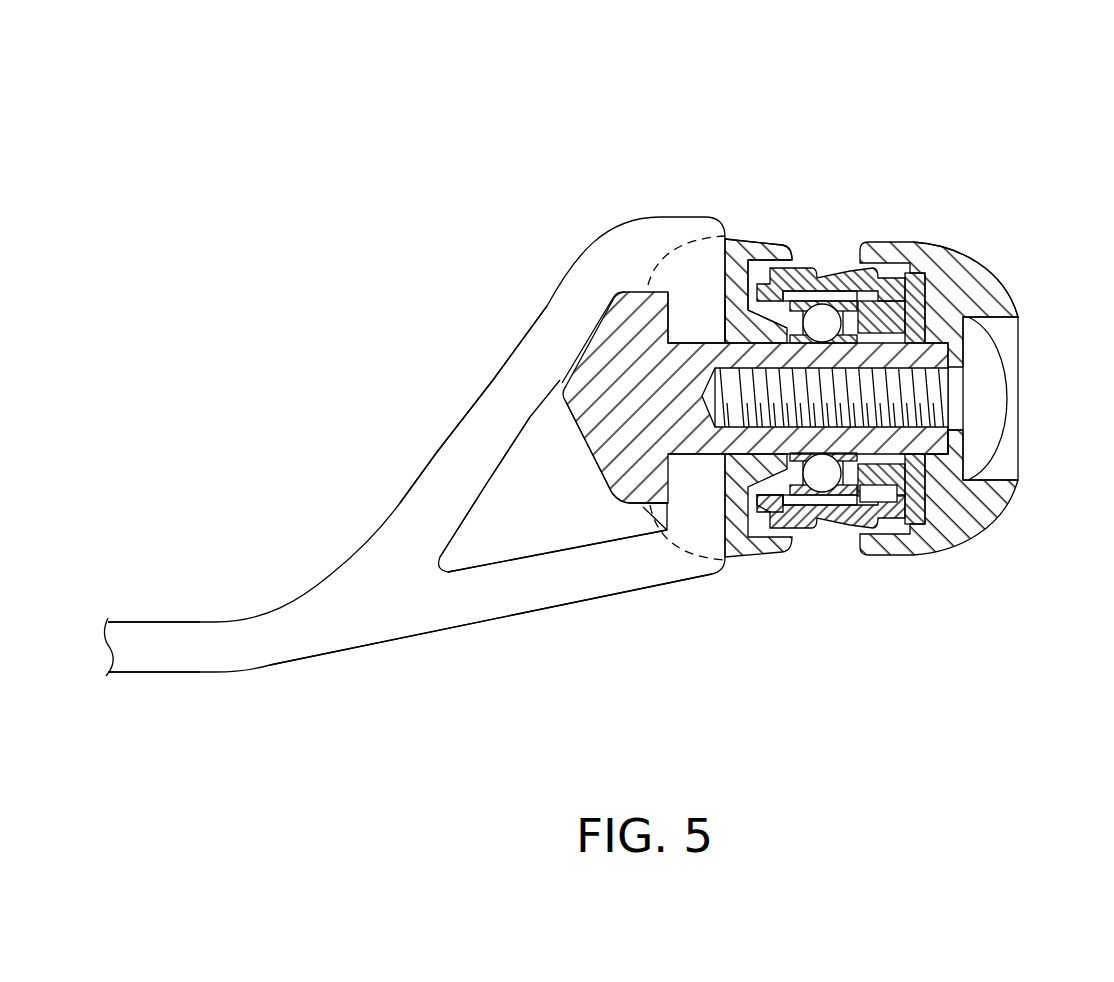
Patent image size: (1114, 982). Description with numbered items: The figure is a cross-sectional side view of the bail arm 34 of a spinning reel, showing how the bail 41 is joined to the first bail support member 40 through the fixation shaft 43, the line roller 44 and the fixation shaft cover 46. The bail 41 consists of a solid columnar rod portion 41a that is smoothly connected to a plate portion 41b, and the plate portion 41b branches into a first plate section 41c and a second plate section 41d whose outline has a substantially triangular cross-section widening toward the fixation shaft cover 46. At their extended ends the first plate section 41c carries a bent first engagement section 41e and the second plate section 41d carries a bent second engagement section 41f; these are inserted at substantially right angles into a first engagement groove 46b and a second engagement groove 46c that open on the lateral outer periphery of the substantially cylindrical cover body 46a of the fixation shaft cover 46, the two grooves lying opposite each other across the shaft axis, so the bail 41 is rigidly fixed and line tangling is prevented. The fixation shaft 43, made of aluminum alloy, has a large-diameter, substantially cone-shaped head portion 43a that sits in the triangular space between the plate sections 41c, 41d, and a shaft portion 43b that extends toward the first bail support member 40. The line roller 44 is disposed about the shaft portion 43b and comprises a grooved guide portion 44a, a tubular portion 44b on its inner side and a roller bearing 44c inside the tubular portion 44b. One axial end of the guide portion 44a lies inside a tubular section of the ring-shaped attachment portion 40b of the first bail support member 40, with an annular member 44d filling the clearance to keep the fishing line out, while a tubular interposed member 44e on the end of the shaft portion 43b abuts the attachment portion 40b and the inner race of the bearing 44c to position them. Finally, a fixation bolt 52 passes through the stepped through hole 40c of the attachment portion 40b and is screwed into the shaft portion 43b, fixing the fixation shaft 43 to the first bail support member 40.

The bail arm 34 is at (988, 177).
The first bail support member 40 is at (985, 290).
The attachment portion 40b is at (995, 500).
The through hole 40c is at (955, 440).
The bail 41 is at (452, 350).
The rod portion 41a is at (152, 643).
The plate portion 41b is at (512, 308).
The first plate section 41c is at (457, 468).
The second plate section 41d is at (542, 583).
The first engagement section 41e is at (685, 317).
The second engagement section 41f is at (672, 487).
The fixation shaft 43 is at (625, 345).
The head portion 43a is at (620, 470).
The shaft portion 43b is at (930, 443).
The line roller 44 is at (825, 270).
The guide portion 44a is at (822, 478).
The tubular portion 44b is at (773, 505).
The bearing 44c is at (800, 517).
The annular member 44d is at (888, 520).
The interposed member 44e is at (917, 533).
The fixation shaft cover 46 is at (768, 230).
The cover body 46a is at (738, 245).
The first engagement groove 46b is at (707, 310).
The second engagement groove 46c is at (727, 490).
The fixation bolt 52 is at (992, 397).